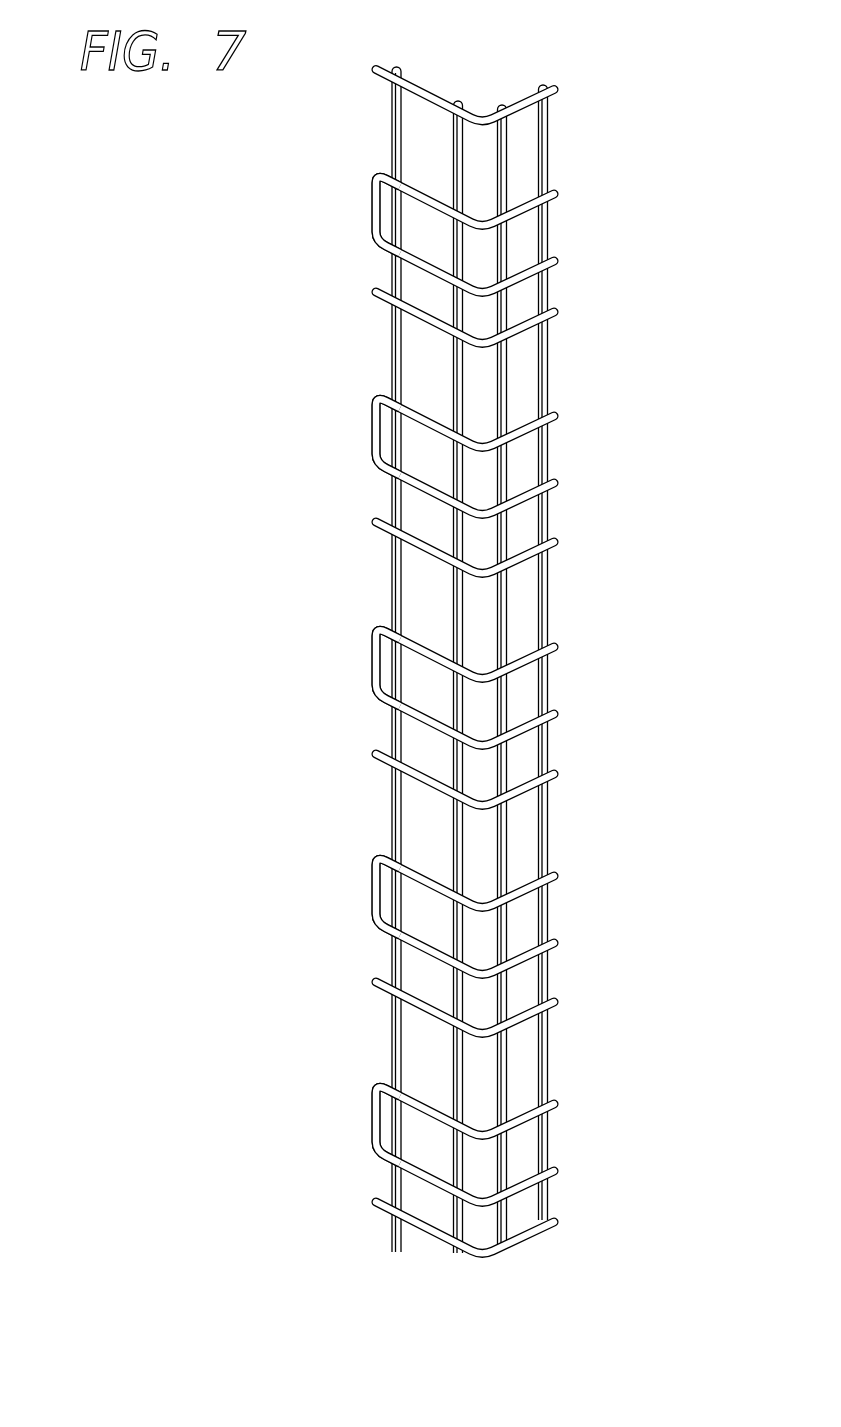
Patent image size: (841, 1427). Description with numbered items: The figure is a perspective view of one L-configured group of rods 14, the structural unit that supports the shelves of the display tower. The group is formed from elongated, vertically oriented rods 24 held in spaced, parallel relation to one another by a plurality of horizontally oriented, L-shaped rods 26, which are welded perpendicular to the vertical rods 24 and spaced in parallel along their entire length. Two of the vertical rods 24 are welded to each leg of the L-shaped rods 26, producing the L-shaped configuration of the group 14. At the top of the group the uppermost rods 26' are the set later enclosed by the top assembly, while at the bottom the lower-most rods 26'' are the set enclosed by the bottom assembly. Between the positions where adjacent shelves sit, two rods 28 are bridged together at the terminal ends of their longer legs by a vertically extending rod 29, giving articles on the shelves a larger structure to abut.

The L-configured group of rods 14 is at (178, 364).
The vertically oriented rods 24 is at (457, 150).
The L-shaped rods 26 is at (453, 662).
The uppermost rods 26' is at (469, 64).
The lower-most rods 26'' is at (529, 1229).
The rods 28 is at (523, 203).
The vertically extending rod 29 is at (372, 200).